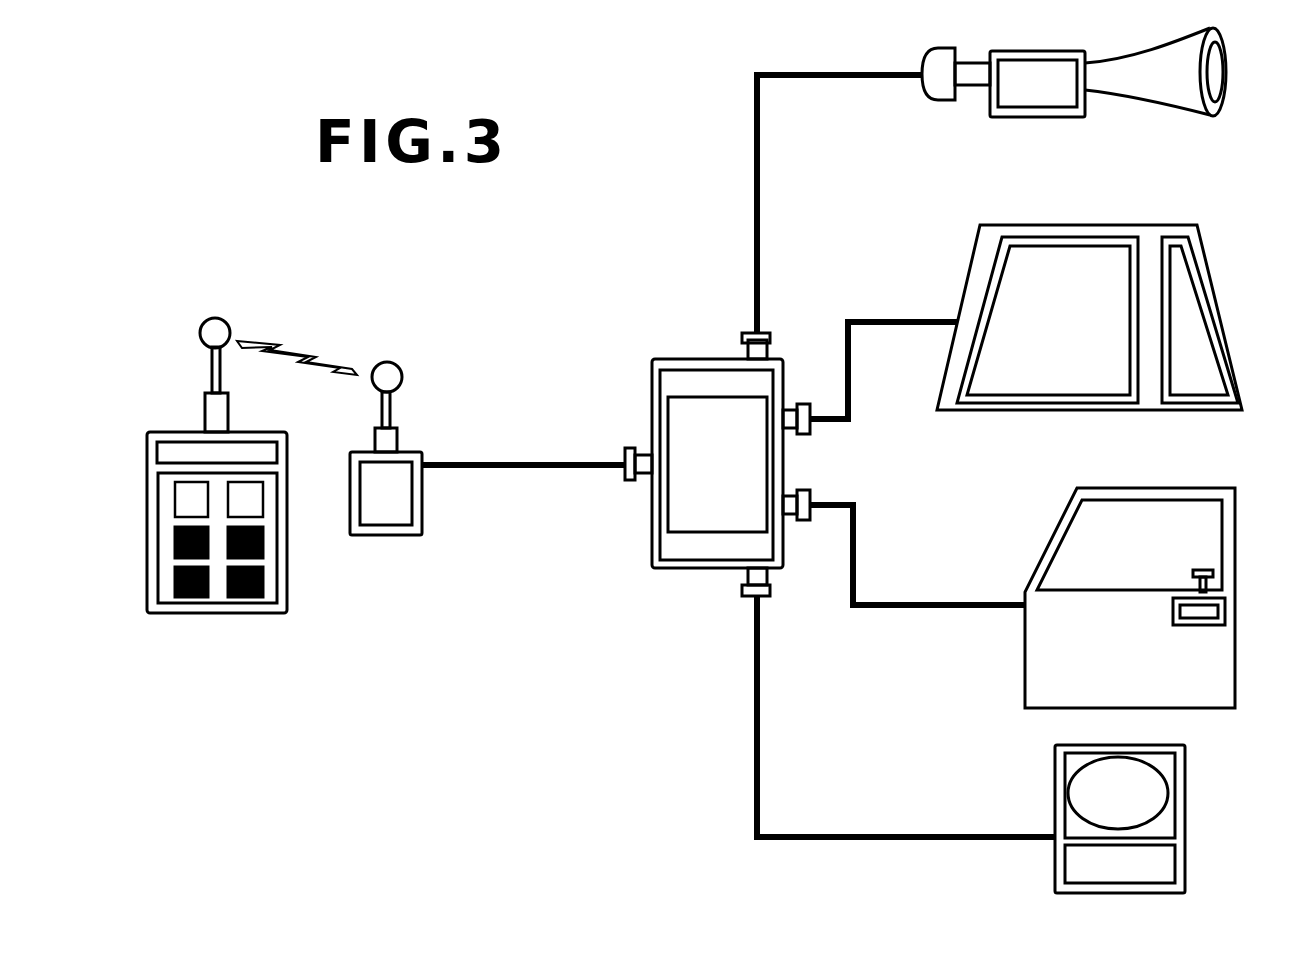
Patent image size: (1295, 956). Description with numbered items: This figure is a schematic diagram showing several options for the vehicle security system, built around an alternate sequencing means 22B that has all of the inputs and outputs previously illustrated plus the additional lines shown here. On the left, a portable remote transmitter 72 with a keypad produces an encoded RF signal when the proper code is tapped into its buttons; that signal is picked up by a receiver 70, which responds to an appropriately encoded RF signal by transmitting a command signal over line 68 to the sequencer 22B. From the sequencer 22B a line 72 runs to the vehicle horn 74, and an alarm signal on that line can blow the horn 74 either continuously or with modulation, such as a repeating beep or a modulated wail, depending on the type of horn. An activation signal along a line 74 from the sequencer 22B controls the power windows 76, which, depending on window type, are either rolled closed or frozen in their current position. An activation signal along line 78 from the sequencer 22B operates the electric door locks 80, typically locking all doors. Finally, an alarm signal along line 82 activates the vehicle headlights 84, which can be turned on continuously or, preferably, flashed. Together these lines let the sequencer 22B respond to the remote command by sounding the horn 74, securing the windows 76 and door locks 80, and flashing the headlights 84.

The sequencing means 22B is at (708, 358).
The line 68 is at (560, 463).
The receiver 70 is at (422, 497).
The portable remote transmitter 72 is at (287, 573).
The vehicle horn 74 is at (1063, 117).
The power windows 76 is at (970, 258).
The line 78 is at (857, 560).
The electric door locks 80 is at (1022, 673).
The line 82 is at (762, 788).
The vehicle headlights 84 is at (1055, 785).